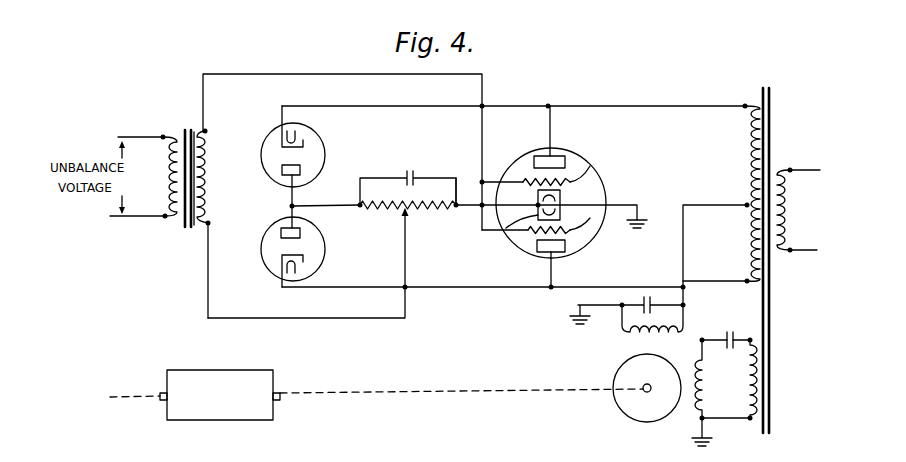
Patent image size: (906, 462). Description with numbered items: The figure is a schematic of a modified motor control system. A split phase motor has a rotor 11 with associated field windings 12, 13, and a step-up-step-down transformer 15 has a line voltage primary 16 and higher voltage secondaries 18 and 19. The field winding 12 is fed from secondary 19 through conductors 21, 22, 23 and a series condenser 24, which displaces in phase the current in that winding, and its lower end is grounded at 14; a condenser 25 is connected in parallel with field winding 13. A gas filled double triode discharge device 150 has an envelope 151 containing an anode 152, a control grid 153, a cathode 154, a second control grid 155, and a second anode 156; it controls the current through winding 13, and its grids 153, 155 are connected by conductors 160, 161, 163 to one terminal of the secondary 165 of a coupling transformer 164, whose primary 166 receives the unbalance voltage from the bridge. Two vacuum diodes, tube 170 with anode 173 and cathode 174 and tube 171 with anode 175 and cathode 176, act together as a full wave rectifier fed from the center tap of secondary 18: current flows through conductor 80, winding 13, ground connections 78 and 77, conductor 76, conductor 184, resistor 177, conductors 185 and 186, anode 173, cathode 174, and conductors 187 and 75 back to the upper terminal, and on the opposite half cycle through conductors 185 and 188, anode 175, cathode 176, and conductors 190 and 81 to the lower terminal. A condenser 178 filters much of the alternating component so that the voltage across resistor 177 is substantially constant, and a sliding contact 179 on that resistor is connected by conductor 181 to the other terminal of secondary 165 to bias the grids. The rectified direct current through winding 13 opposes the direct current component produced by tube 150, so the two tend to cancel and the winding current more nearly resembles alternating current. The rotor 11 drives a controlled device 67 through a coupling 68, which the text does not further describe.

The rotor 11 is at (640, 408).
The field winding 12 is at (706, 400).
The field winding 13 is at (632, 337).
The ground 14 is at (698, 440).
The step-up-step-down transformer 15 is at (798, 158).
The line voltage primary 16 is at (797, 224).
The secondary winding 18 is at (745, 150).
The secondary winding 19 is at (750, 377).
The conductor 21 is at (734, 420).
The conductor 22 is at (703, 337).
The conductor 23 is at (740, 350).
The condenser 24 is at (735, 330).
The condenser 25 is at (642, 296).
The controlled device 67 is at (251, 371).
The mechanical coupling shaft 68 is at (457, 390).
The conductor 75 is at (665, 105).
The conductor 76 is at (628, 200).
The ground connection 77 is at (646, 221).
The ground connection 78 is at (576, 314).
The conductor 80 is at (683, 242).
The conductor 81 is at (707, 280).
The gas filled double triode discharge device 150 is at (524, 142).
The gas filled envelope 151 is at (574, 166).
The anode 152 is at (563, 152).
The control grid 153 is at (590, 159).
The cathode 154 is at (512, 236).
The second control grid 155 is at (590, 238).
The second anode 156 is at (537, 252).
The conductor 160 is at (495, 177).
The conductor 161 is at (482, 212).
The conductor 163 is at (484, 80).
The coupling transformer 164 is at (225, 171).
The secondary 165 is at (208, 142).
The primary 166 is at (155, 137).
The tube 170 is at (327, 136).
The tube 171 is at (328, 259).
The anode 173 is at (300, 170).
The cathode 174 is at (303, 147).
The anode 175 is at (281, 233).
The cathode 176 is at (282, 254).
The resistor 177 is at (423, 195).
The condenser 178 is at (406, 171).
The contact 179 is at (409, 214).
The conductor 181 is at (408, 271).
The conductor 184 is at (462, 202).
The conductor 185 is at (336, 207).
The conductor 186 is at (288, 197).
The conductor 187 is at (327, 108).
The conductor 188 is at (288, 208).
The conductor 190 is at (338, 288).